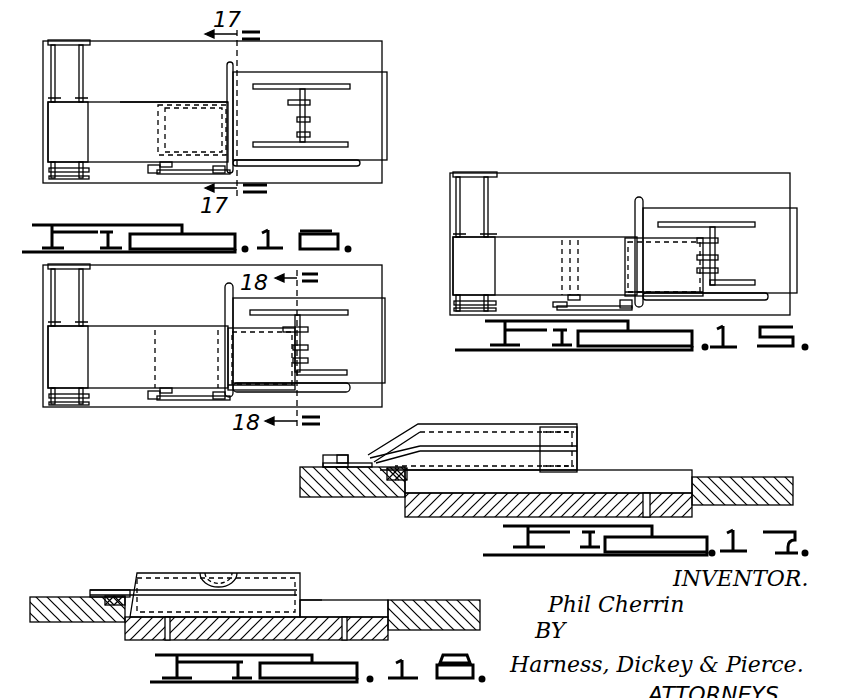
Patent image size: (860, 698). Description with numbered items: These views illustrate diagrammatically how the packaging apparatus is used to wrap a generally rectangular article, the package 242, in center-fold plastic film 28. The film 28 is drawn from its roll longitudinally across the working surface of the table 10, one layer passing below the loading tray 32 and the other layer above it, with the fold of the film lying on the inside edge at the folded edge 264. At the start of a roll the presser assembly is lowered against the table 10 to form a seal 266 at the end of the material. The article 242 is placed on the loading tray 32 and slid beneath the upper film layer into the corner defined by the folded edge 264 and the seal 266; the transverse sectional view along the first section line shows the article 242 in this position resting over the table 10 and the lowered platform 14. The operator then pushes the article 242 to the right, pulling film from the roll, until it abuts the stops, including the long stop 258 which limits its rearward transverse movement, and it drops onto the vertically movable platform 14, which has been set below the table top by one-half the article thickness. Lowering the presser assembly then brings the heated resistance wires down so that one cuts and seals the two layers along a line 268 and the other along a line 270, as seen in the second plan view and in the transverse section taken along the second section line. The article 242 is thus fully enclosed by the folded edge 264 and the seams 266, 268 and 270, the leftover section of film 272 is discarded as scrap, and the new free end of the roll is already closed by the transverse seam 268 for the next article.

In FIG. 17, the table 10 is at (720, 477).
In FIG. 18, the table 10 is at (430, 600).
In FIG. 17, the vertically movable platform 14 is at (575, 498).
In FIG. 18, the vertically movable platform 14 is at (322, 618).
In FIG. 14, the center-fold plastic film 28 is at (102, 103).
In FIG. 16, the center-fold plastic film 28 is at (120, 377).
In FIG. 15, the center-fold plastic film 28 is at (520, 242).
In FIG. 17, the center-fold plastic film 28 is at (408, 435).
In FIG. 18, the center-fold plastic film 28 is at (222, 573).
In FIG. 14, the loading tray 32 is at (167, 174).
In FIG. 16, the loading tray 32 is at (172, 397).
In FIG. 15, the loading tray 32 is at (592, 297).
In FIG. 17, the loading tray 32 is at (333, 460).
In FIG. 14, the package 242 is at (187, 110).
In FIG. 16, the package 242 is at (268, 340).
In FIG. 15, the package 242 is at (663, 255).
In FIG. 17, the package 242 is at (535, 435).
In FIG. 18, the package 242 is at (212, 573).
In FIG. 18, the long stop 258 is at (313, 602).
In FIG. 14, the folded edge 264 is at (137, 102).
In FIG. 17, the folded edge 264 is at (577, 450).
In FIG. 14, the seal 266 is at (237, 132).
In FIG. 16, the seal 266 is at (300, 355).
In FIG. 15, the seal 266 is at (713, 270).
In FIG. 17, the seal 266 is at (447, 447).
In FIG. 18, the seal 266 is at (257, 592).
In FIG. 16, the cut and seal line 268 is at (227, 350).
In FIG. 18, the cut and seal line 268 is at (110, 595).
In FIG. 16, the cut and seal line 270 is at (232, 397).
In FIG. 16, the extra section of film material 272 is at (240, 398).